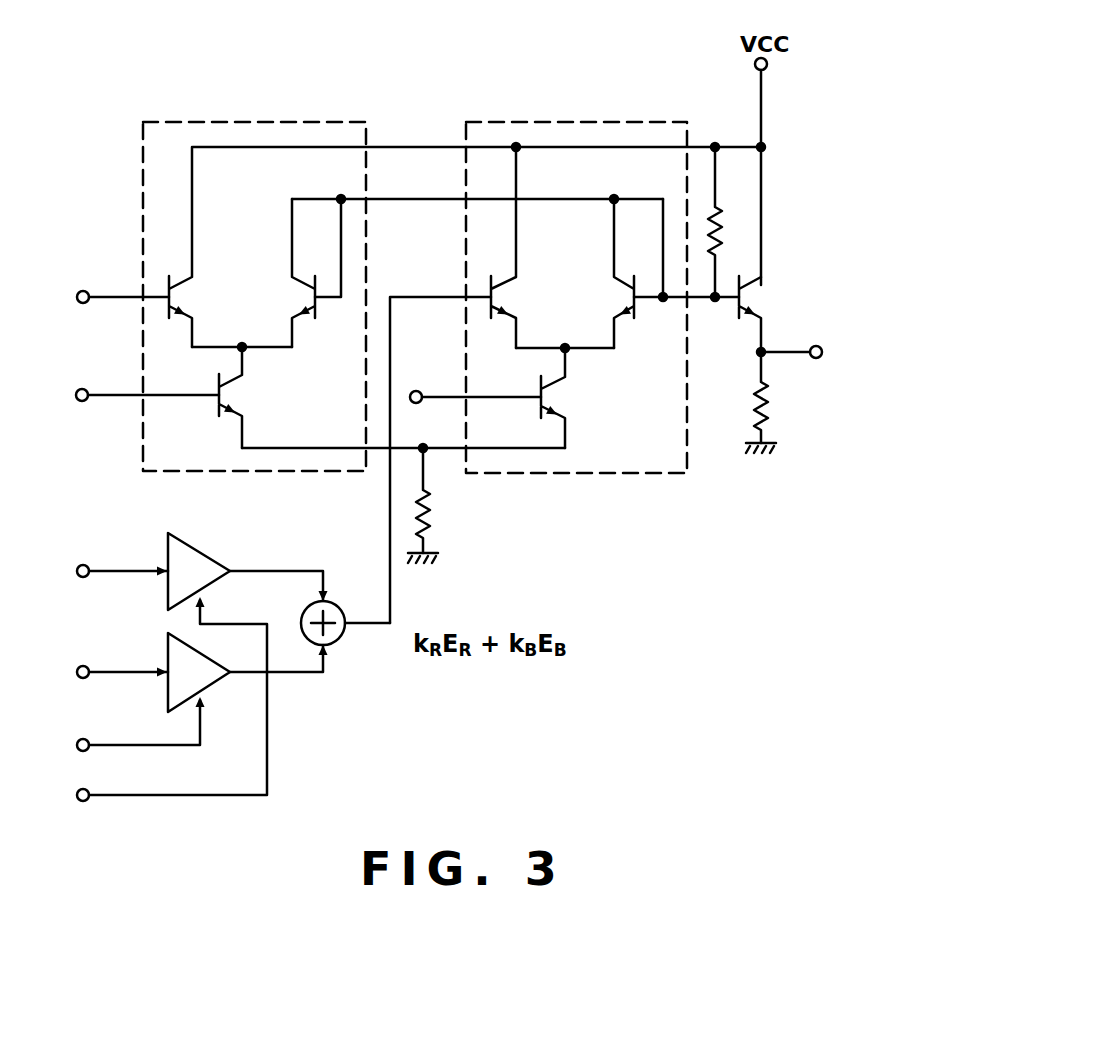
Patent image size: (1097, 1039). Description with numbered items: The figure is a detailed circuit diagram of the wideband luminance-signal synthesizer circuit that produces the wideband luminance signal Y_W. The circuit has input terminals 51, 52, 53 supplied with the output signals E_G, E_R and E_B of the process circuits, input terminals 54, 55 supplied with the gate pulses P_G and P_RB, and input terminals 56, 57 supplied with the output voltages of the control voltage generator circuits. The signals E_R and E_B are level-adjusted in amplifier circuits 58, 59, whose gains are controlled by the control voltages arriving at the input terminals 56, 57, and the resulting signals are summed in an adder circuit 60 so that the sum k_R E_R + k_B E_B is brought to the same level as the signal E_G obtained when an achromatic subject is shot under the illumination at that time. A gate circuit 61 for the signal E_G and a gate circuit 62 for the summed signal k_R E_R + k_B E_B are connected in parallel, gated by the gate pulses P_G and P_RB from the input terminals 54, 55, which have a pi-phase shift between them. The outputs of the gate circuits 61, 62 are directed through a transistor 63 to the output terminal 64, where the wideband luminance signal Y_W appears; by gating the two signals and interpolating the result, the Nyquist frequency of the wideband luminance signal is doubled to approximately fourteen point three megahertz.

The input terminal 51 is at (77, 298).
The input terminal 52 is at (77, 571).
The input terminal 53 is at (77, 672).
The input terminal 54 is at (76, 396).
The input terminal 55 is at (418, 403).
The input terminal 56 is at (77, 745).
The input terminal 57 is at (77, 795).
The amplifier circuit 58 is at (213, 556).
The amplifier circuit 59 is at (222, 661).
The adder circuit 60 is at (309, 614).
The gate circuit 61 is at (340, 122).
The gate circuit 62 is at (637, 122).
The transistor 63 is at (751, 298).
The output terminal 64 is at (822, 354).